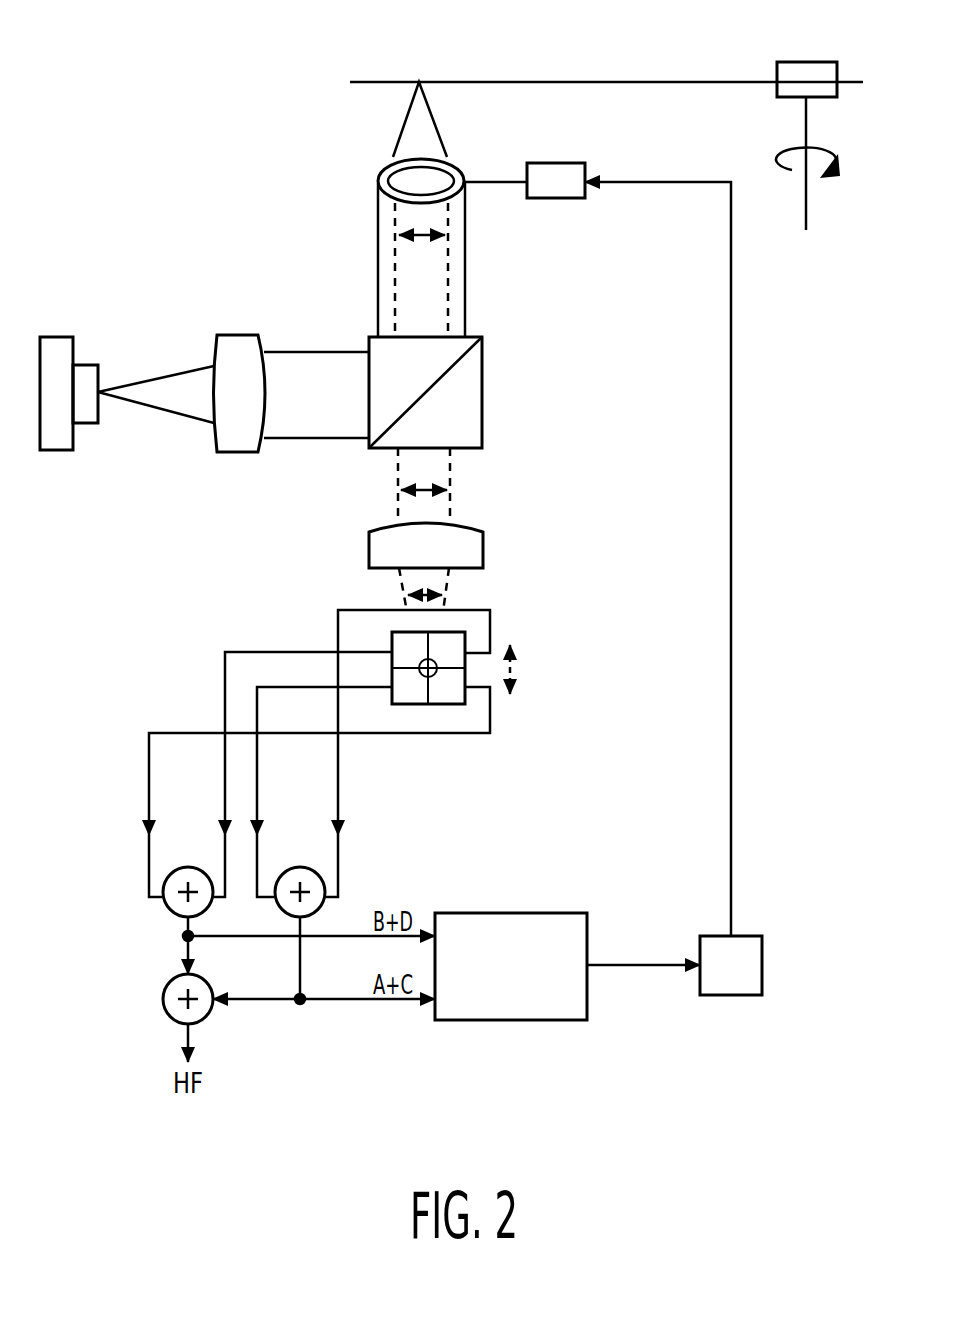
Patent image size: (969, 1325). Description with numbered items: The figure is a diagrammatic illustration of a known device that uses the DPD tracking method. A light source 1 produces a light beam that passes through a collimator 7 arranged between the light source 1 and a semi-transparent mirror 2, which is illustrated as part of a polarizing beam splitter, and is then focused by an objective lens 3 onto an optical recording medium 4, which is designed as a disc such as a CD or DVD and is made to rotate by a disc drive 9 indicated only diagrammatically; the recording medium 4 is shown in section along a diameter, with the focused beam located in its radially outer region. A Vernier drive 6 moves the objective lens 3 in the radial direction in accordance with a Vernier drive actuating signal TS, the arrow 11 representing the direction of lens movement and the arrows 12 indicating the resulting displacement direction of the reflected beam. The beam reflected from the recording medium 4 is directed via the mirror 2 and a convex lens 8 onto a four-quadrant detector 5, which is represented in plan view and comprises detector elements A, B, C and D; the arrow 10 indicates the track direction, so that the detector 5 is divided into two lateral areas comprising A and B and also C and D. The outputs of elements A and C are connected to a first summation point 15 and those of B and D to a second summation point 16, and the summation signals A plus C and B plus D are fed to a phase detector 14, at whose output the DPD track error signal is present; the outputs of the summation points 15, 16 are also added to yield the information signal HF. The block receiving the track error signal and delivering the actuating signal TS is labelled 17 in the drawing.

The light source 1 is at (57, 337).
The semi-transparent mirror 2 is at (483, 390).
The objective lens 3 is at (378, 172).
The optical recording medium 4 is at (668, 82).
The four-quadrant detector 5 is at (443, 705).
The Vernier drive 6 is at (563, 198).
The collimator 7 is at (240, 335).
The convex lens 8 is at (369, 548).
The disc drive 9 is at (778, 160).
The arrow indicating track direction 10 is at (560, 701).
The arrow indicating direction of lens movement 11 is at (425, 242).
The arrows indicating beam displacement direction 12 is at (425, 487).
The phase detector 14 is at (503, 913).
The first summation point 15 is at (188, 867).
The second summation point 16 is at (300, 867).
The tracking servo circuit 17 is at (732, 997).